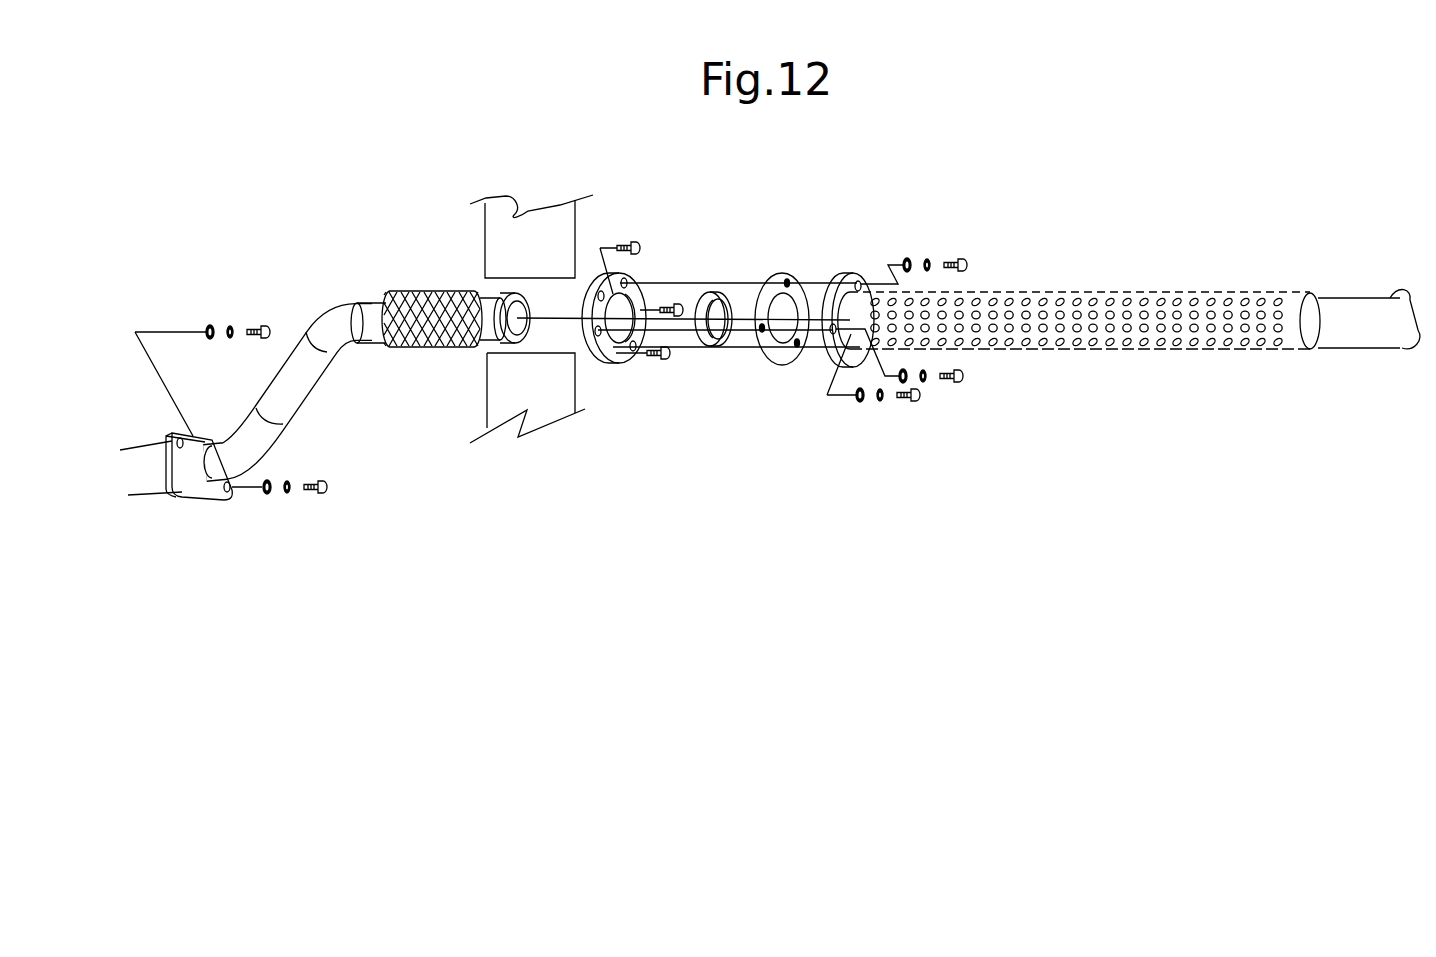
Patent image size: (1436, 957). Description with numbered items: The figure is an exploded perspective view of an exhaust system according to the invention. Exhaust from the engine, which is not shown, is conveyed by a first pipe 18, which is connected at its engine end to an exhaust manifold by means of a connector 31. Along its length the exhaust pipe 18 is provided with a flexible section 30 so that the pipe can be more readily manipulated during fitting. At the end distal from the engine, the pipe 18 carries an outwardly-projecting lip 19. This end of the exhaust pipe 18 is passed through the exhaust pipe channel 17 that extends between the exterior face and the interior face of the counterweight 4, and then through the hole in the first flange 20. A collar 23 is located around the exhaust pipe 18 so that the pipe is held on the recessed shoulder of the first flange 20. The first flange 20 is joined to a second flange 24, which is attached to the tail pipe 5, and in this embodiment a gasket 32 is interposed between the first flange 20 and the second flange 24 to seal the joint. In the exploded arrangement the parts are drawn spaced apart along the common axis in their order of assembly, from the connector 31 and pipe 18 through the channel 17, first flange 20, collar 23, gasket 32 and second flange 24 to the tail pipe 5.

The counterweight 4 is at (593, 196).
The tail pipe 5 is at (1137, 355).
The exhaust pipe channel 17 is at (553, 334).
The first pipe 18 is at (325, 326).
The outwardly-projecting lip 19 is at (500, 298).
The first flange 20 is at (636, 290).
The collar 23 is at (719, 347).
The second flange 24 is at (849, 276).
The flexible section 30 is at (428, 352).
The connector 31 is at (213, 498).
The gasket 32 is at (773, 275).